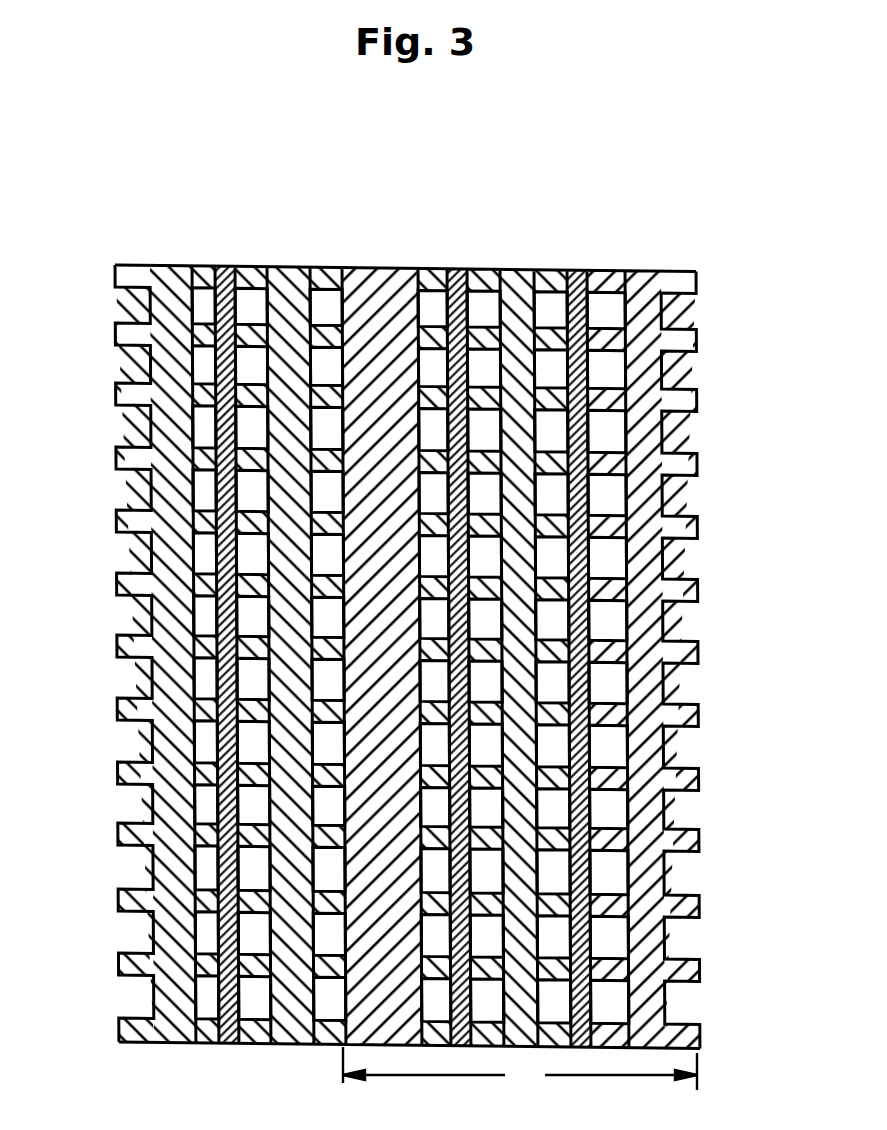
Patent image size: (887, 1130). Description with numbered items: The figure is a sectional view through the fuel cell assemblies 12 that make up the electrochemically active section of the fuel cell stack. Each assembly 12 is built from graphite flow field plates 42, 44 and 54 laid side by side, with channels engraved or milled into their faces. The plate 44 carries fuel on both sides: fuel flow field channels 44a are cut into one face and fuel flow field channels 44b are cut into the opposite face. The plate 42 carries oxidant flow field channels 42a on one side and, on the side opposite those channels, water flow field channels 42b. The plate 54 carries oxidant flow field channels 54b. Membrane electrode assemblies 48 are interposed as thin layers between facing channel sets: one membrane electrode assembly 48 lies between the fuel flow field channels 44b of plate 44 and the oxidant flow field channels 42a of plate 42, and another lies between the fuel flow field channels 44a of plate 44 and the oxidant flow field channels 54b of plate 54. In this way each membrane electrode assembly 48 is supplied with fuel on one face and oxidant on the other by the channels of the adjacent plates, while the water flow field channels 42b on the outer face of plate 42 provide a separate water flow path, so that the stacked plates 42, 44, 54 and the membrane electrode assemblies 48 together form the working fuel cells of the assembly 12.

The fuel cell assembly 12 is at (520, 1070).
The graphite flow field plate 42 is at (645, 280).
The oxidant flow field channels 42a is at (251, 290).
The water flow field channels 42b is at (323, 290).
The graphite flow field plate 44 is at (517, 280).
The fuel flow field channels 44a is at (132, 298).
The fuel flow field channels 44b is at (205, 290).
The membrane electrode assembly 48 is at (226, 280).
The graphite flow field plate 54 is at (403, 268).
The oxidant flow field channels 54b is at (432, 270).